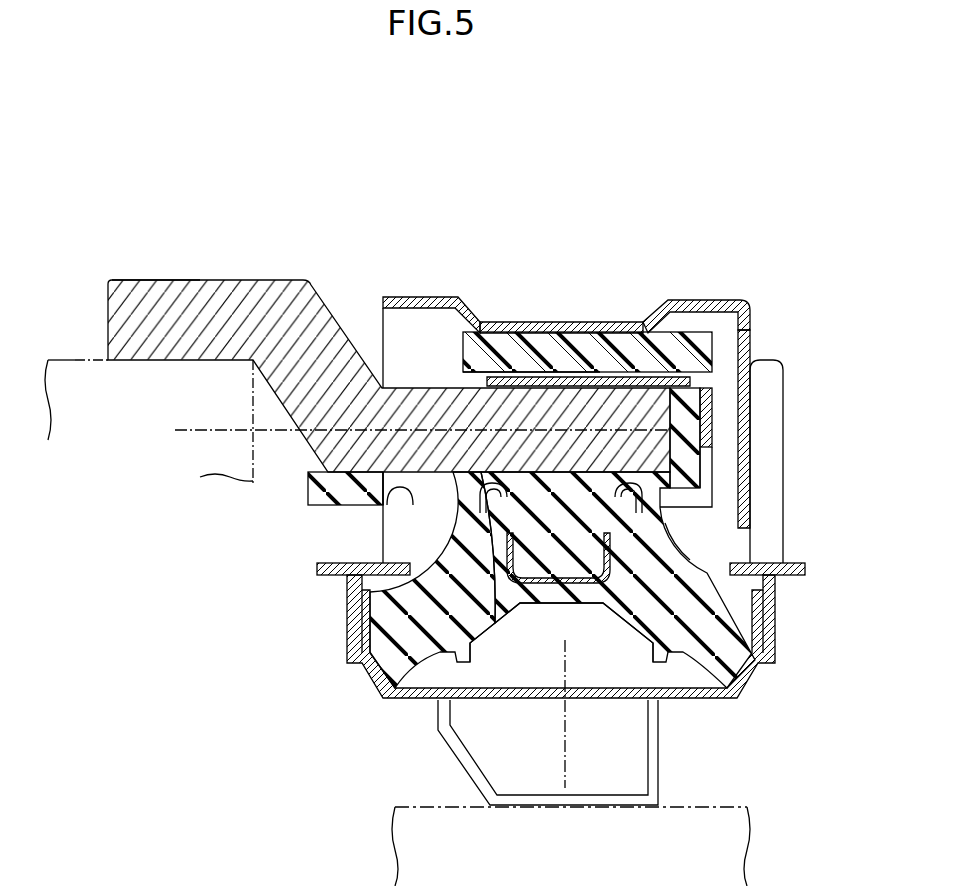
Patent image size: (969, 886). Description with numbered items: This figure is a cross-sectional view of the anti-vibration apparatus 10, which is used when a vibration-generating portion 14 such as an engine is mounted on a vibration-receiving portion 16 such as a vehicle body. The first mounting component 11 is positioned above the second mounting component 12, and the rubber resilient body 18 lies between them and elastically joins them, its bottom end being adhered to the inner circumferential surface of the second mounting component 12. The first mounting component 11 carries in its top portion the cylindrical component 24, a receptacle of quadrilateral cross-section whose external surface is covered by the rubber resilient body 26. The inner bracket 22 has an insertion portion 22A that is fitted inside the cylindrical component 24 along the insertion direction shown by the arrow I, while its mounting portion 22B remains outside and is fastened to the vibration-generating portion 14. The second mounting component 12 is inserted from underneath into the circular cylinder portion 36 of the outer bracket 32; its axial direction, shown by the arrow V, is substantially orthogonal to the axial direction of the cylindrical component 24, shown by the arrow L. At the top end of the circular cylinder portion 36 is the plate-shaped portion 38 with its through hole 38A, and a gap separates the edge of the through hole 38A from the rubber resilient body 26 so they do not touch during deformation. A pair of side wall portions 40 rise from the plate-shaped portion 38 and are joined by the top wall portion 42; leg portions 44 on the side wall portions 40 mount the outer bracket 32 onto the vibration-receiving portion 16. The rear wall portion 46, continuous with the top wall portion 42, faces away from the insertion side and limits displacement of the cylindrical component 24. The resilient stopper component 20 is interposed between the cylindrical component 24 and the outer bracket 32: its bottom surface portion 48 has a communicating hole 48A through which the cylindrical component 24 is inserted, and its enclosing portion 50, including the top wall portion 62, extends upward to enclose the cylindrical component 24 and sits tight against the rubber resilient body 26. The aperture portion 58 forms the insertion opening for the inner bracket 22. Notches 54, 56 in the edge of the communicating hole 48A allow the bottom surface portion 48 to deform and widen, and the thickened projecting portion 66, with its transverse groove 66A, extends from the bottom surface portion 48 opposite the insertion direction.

The anti-vibration apparatus 10 is at (368, 198).
The first mounting component 11 is at (593, 583).
The second mounting component 12 is at (777, 625).
The vibration-generating portion 14 is at (80, 360).
The vibration-receiving portion 16 is at (735, 807).
The rubber resilient body 18 is at (673, 542).
The resilient stopper component 20 is at (724, 350).
The inner bracket 22 is at (257, 248).
The insertion portion 22A is at (697, 453).
The mounting portion 22B is at (147, 280).
The cylindrical component 24 is at (627, 378).
The rubber resilient body 26 is at (555, 368).
The outer bracket 32 is at (753, 253).
The circular cylinder portion 36 is at (777, 647).
The plate-shaped portion 38 is at (797, 562).
The through hole 38A is at (395, 563).
The side wall portions 40 is at (380, 336).
The top wall portion 42 is at (540, 322).
The leg portions 44 is at (665, 747).
The rear wall portion 46 is at (752, 455).
The bottom surface portion 48 is at (704, 510).
The communicating hole 48A is at (492, 598).
The enclosing portion 50 is at (712, 328).
The notch 54 is at (447, 499).
The notch 56 is at (708, 497).
The aperture portion 58 is at (467, 380).
The top wall portion 62 is at (680, 328).
The projecting portion 66 is at (306, 485).
The groove 66A is at (385, 508).
The insertion direction I is at (95, 430).
The axial direction of the cylindrical component L is at (213, 432).
The axial direction of the second mounting component V is at (567, 725).